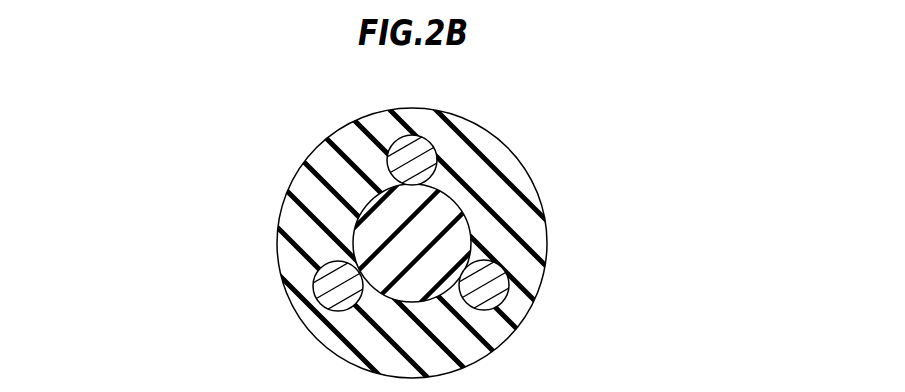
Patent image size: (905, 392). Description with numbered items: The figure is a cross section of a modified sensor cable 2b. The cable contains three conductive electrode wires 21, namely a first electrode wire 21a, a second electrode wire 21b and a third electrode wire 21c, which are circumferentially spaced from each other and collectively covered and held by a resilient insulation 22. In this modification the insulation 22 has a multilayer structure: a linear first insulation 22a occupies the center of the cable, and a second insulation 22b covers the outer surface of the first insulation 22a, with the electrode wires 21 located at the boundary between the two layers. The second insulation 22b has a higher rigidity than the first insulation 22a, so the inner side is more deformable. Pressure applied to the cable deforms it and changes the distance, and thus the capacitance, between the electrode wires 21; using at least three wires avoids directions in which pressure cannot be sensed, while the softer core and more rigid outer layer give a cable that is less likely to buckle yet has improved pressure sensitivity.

The sensor cable 2b is at (322, 128).
The electrode wire 21 is at (425, 150).
The first electrode wire 21a is at (405, 147).
The second electrode wire 21b is at (497, 290).
The third electrode wire 21c is at (328, 293).
The insulation 22 is at (603, 168).
The first insulation 22a is at (465, 217).
The second insulation 22b is at (520, 227).